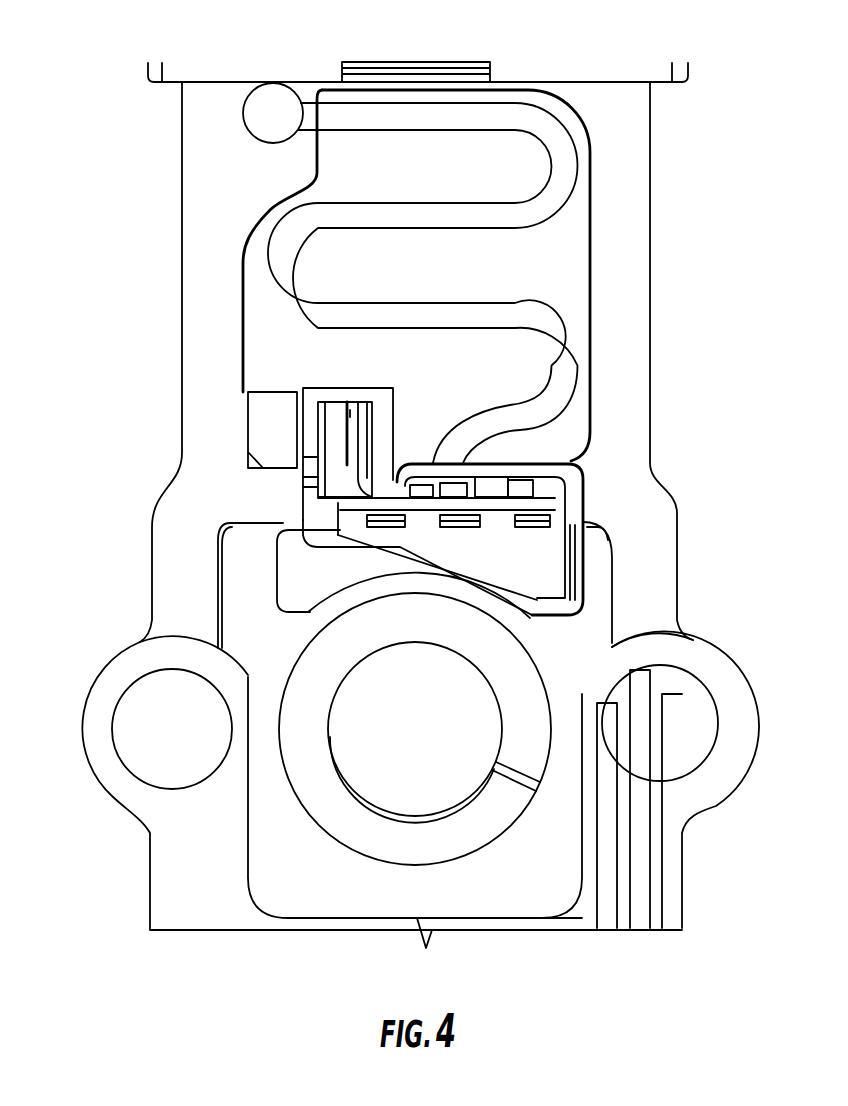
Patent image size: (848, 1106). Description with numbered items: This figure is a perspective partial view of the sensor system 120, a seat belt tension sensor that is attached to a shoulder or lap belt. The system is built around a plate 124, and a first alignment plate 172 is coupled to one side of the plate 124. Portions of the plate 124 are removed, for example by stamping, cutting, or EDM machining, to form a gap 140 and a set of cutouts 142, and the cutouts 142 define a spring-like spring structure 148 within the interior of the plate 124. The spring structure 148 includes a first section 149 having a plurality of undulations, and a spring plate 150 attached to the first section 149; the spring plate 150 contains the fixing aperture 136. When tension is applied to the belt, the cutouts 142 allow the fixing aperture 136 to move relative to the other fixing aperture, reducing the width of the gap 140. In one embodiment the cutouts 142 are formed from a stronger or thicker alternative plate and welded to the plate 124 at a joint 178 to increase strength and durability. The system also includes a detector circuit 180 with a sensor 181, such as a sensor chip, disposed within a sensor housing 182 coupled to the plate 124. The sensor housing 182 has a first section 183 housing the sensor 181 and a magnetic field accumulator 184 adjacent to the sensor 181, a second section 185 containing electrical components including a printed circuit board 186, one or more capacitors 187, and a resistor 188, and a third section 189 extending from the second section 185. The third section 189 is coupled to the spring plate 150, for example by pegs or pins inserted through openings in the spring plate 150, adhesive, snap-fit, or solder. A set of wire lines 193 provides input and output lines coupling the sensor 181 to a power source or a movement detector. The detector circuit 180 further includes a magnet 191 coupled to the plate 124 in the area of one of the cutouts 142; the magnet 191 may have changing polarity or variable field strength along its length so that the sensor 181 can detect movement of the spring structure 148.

The sensor system 120 is at (84, 68).
The plate 124 is at (640, 297).
The fixing aperture 136 is at (366, 735).
The gap 140 is at (288, 904).
The cutouts 142 is at (487, 283).
The spring structure 148 is at (234, 264).
The first section 149 is at (568, 172).
The spring plate 150 is at (598, 556).
The first alignment plate 172 is at (165, 875).
The joint 178 is at (236, 113).
The detector circuit 180 is at (220, 479).
The sensor 181 is at (350, 417).
The sensor housing 182 is at (550, 444).
The first section 183 is at (394, 406).
The magnetic field accumulator 184 is at (327, 452).
The second section 185 is at (576, 480).
The printed circuit board 186 is at (546, 503).
The capacitors 187 is at (412, 490).
The resistor 188 is at (505, 485).
The third section 189 is at (288, 600).
The magnet 191 is at (263, 427).
The wire lines 193 is at (333, 447).